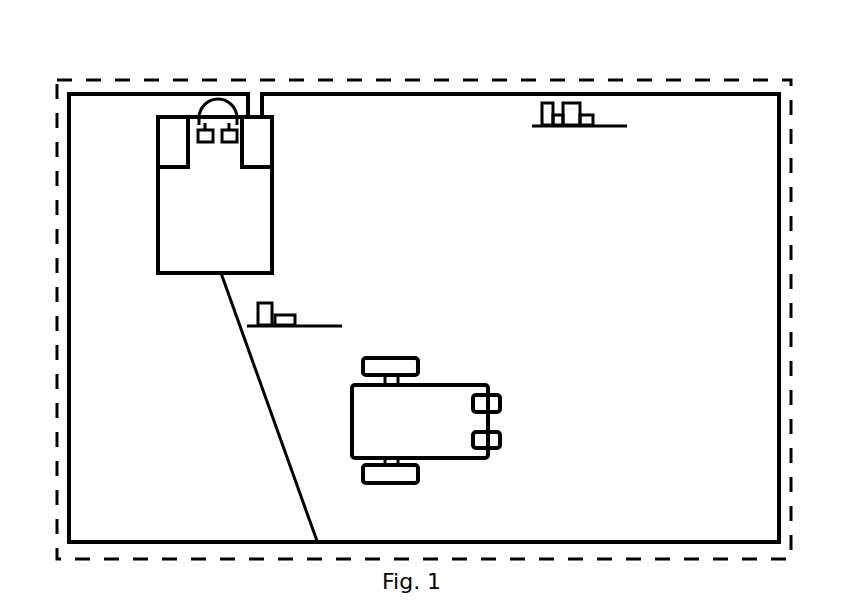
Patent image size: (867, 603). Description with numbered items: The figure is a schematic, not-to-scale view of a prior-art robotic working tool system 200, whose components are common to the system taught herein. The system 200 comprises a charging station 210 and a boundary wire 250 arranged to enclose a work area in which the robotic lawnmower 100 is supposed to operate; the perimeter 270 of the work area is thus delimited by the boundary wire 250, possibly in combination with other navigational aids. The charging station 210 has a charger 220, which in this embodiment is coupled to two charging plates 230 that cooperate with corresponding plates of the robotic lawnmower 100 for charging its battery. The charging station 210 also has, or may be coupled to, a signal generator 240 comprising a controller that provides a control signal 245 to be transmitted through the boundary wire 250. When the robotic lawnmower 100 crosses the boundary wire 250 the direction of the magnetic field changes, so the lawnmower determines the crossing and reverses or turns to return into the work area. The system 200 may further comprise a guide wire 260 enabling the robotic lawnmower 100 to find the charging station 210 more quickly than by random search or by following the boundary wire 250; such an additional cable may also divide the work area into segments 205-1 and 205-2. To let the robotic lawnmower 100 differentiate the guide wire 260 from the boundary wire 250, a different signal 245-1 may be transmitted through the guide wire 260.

The robotic lawnmower 100 is at (460, 385).
The robotic working tool system 200 is at (129, 65).
The segment of the work area 205-1 is at (556, 275).
The segment of the work area 205-2 is at (248, 460).
The charging station 210 is at (205, 161).
The charger 220 is at (158, 143).
The charging plates 230 is at (217, 90).
The signal generator 240 is at (272, 150).
The control signal 245 is at (587, 115).
The different signal 245-1 is at (313, 315).
The boundary wire 250 is at (377, 93).
The guide wire 260 is at (255, 376).
The perimeter 270 is at (460, 79).